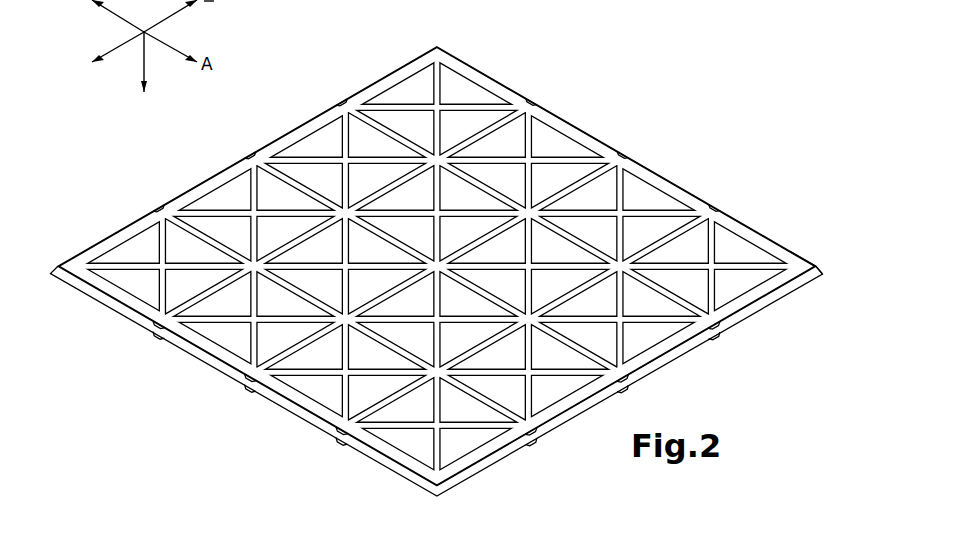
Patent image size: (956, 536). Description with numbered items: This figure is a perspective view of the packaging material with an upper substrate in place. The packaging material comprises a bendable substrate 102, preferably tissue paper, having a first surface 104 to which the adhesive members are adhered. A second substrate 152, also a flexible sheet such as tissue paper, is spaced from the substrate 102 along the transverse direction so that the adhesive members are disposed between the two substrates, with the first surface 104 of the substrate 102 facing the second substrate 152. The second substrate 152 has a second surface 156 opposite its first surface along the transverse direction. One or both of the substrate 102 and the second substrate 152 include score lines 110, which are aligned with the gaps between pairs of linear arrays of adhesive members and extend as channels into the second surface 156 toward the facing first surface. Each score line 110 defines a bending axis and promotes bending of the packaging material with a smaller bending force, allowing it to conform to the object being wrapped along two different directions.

The score lines 110 is at (441, 264).
The second substrate 152 is at (788, 252).
The second surface 156 is at (780, 242).
The first surface 104 is at (817, 266).
The substrate 102 is at (807, 276).